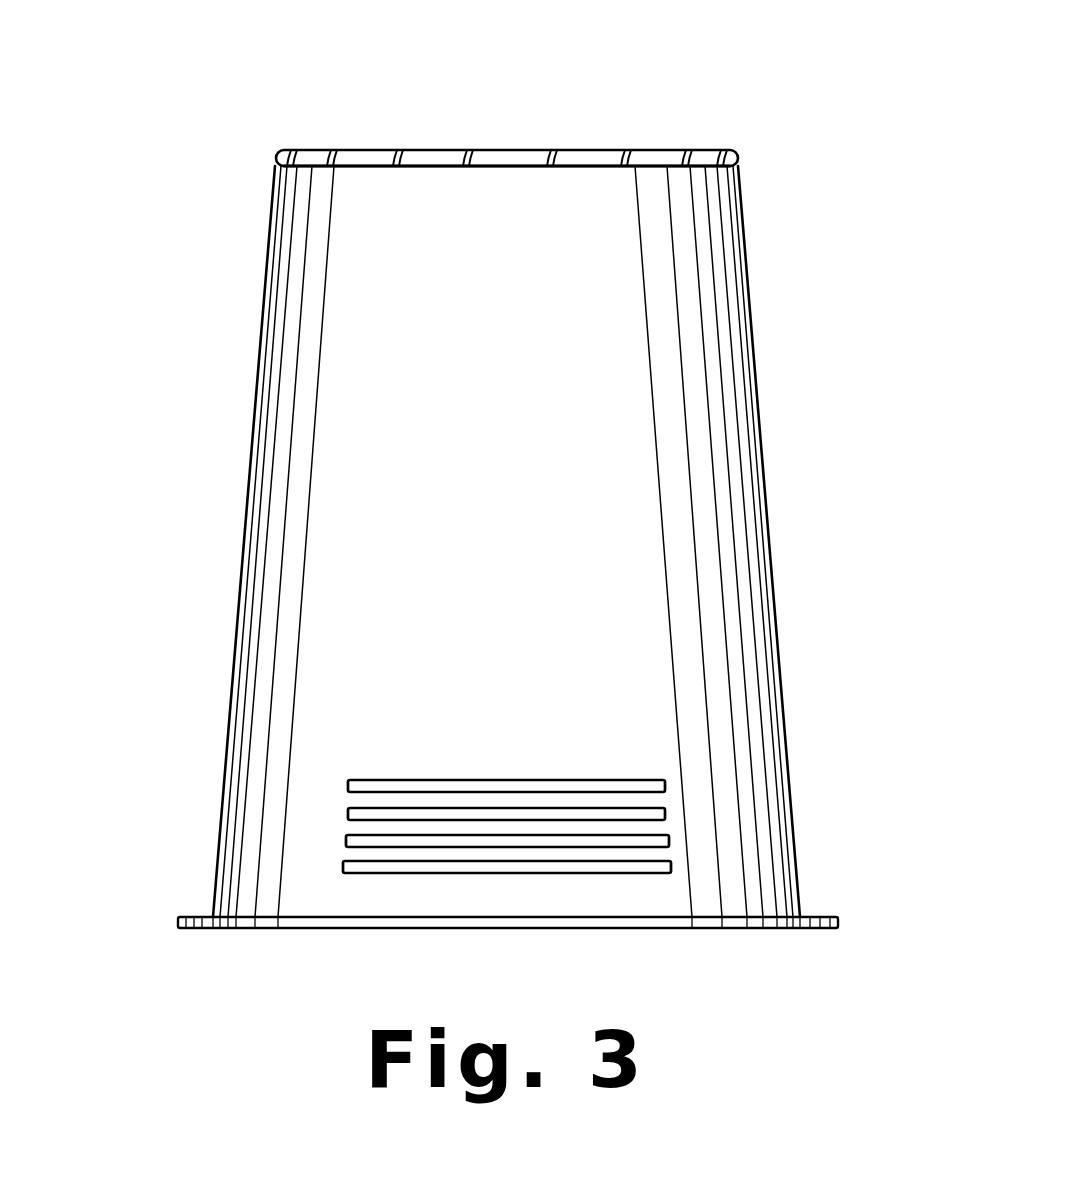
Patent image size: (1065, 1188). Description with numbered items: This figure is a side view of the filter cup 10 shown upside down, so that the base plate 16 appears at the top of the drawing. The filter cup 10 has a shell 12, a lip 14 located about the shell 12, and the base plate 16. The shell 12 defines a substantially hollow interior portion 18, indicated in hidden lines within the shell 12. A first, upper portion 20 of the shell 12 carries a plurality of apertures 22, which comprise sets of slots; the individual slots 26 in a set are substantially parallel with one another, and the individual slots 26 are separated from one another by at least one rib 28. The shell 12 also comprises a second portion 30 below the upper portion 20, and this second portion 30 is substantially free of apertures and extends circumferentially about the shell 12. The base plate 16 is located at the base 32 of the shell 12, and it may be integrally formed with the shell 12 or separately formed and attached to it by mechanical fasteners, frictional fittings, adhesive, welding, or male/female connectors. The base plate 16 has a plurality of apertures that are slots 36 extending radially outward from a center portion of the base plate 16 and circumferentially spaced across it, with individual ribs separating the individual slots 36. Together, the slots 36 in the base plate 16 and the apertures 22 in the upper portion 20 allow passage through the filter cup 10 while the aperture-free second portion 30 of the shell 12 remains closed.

The filter cup 10 is at (612, 70).
The shell 12 is at (310, 364).
The lip 14 is at (178, 922).
The base plate 16 is at (312, 155).
The hollow interior portion 18 is at (430, 283).
The upper portion 20 is at (192, 752).
The apertures 22 is at (497, 772).
The individual slots 26 is at (346, 786).
The rib 28 is at (645, 852).
The second portion 30 is at (284, 477).
The base 32 is at (750, 193).
The slots 36 is at (338, 150).